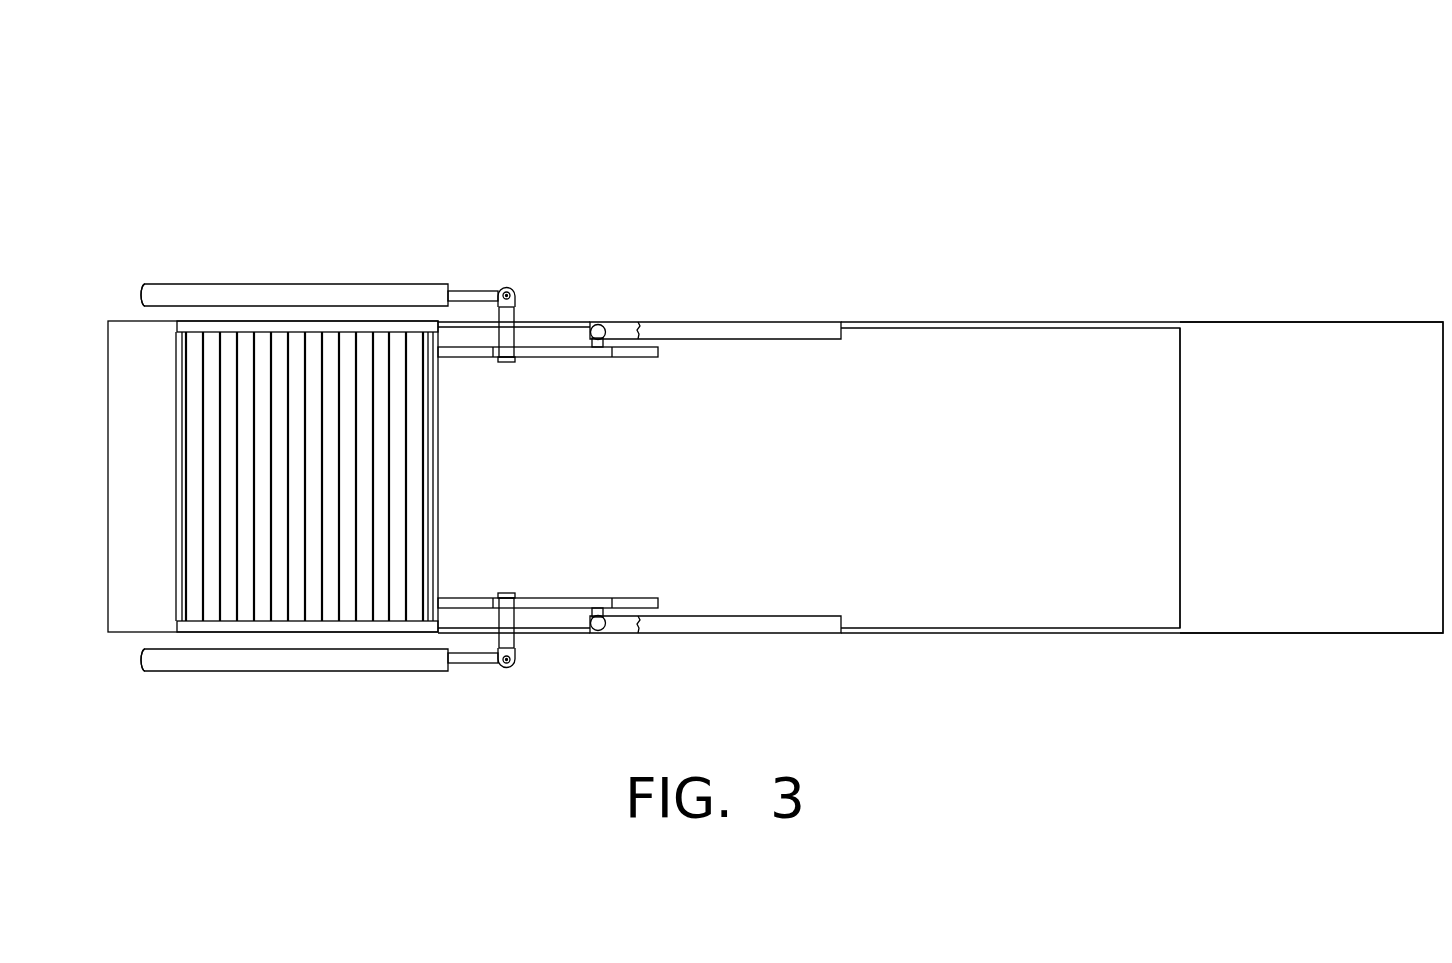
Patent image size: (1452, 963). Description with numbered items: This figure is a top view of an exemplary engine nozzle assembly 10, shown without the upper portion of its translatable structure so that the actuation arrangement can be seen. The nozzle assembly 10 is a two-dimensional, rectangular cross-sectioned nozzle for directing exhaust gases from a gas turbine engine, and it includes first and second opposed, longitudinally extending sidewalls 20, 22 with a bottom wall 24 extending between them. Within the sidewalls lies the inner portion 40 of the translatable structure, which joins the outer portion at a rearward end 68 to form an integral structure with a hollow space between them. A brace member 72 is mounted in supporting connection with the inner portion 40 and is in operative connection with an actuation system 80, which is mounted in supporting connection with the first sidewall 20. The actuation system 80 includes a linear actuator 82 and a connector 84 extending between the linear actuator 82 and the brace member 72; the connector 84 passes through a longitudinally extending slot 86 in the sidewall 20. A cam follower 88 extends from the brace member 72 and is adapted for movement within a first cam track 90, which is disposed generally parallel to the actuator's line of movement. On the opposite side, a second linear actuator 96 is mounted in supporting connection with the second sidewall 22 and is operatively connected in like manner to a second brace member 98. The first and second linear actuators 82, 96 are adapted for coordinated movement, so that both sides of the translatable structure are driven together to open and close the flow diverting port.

The engine nozzle assembly 10 is at (472, 108).
The first sidewall 20 is at (1083, 635).
The second sidewall 22 is at (920, 323).
The bottom wall 24 is at (1327, 595).
The inner portion 40 is at (1088, 347).
The rearward end 68 is at (1182, 438).
The brace member 72 is at (570, 602).
The actuation system 80 is at (343, 722).
The linear actuator 82 is at (393, 660).
The connector 84 is at (503, 620).
The slot 86 is at (537, 630).
The cam follower 88 is at (602, 628).
The first cam track 90 is at (805, 623).
The second linear actuator 96 is at (292, 293).
The second brace member 98 is at (550, 353).